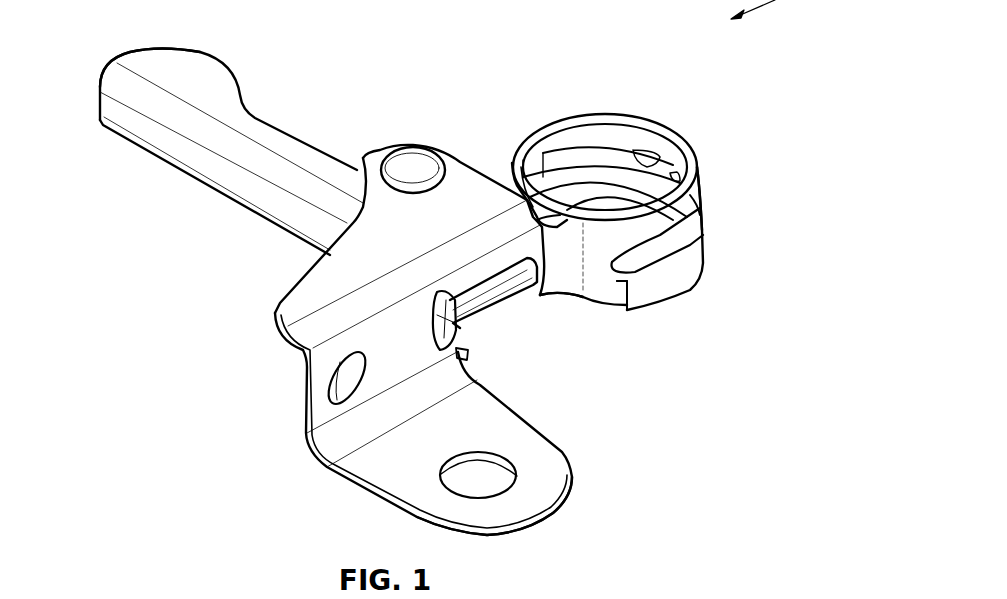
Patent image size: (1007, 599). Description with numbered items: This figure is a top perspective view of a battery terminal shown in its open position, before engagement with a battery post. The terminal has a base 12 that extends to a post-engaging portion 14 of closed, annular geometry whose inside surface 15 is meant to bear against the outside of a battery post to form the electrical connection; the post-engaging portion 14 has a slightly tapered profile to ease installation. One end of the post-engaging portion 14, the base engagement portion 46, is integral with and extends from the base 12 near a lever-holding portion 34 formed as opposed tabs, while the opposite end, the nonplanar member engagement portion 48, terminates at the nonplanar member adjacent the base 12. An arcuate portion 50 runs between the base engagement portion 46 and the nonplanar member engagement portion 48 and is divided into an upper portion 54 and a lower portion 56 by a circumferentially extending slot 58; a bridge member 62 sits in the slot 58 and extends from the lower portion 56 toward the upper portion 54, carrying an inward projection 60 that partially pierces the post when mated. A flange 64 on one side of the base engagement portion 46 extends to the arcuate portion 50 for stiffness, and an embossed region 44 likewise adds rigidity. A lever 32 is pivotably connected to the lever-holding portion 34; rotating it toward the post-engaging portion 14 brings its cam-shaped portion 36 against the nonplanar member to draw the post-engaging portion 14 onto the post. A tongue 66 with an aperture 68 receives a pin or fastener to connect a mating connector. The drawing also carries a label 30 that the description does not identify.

The base 12 is at (302, 400).
The post-engaging portion 14 is at (693, 283).
The inside surface 15 is at (570, 137).
The handle 30 is at (358, 177).
The lever 32 is at (150, 150).
The lever-holding portion 34 is at (390, 237).
The cam-shaped portion 36 is at (413, 145).
The embossed region 44 is at (473, 307).
The base engagement portion 46 is at (570, 245).
The nonplanar member engagement portion 48 is at (540, 167).
The arcuate portion 50 is at (700, 187).
The upper portion 54 is at (700, 197).
The lower portion 56 is at (703, 267).
The circumferentially extending slot 58 is at (623, 260).
The projection 60 is at (637, 150).
The bridge member 62 is at (657, 155).
The flange 64 is at (605, 292).
The tongue 66 is at (567, 457).
The aperture 68 is at (493, 483).